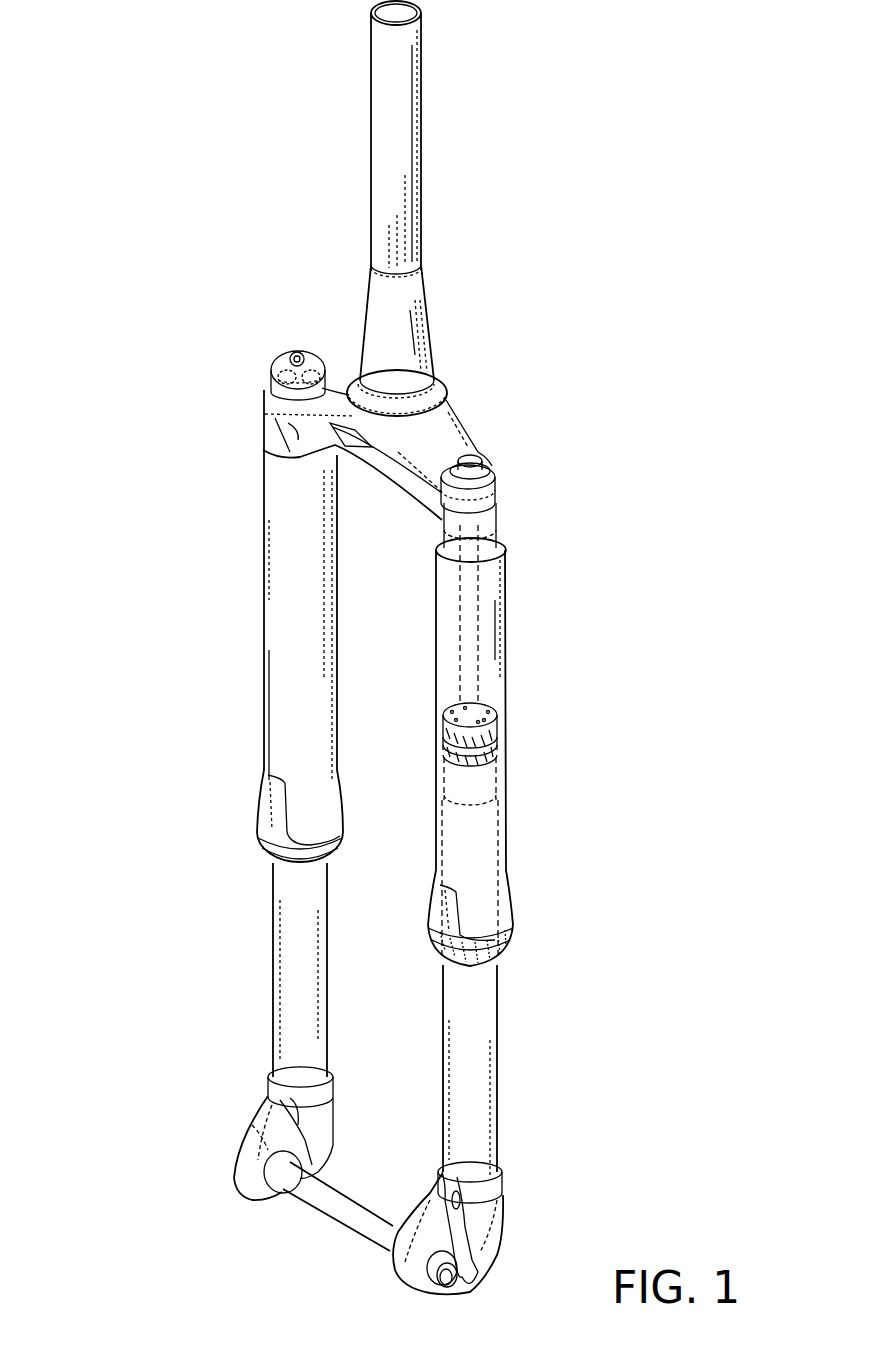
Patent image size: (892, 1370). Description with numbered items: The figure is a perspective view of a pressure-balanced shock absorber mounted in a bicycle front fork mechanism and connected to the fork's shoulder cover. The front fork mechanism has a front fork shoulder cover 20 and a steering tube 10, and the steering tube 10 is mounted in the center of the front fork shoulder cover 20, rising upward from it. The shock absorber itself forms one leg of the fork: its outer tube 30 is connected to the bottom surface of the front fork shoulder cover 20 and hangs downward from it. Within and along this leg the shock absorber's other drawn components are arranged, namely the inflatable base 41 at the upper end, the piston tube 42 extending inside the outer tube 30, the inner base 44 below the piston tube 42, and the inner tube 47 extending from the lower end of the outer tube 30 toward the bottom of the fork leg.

The steering tube 10 is at (432, 160).
The front fork shoulder cover 20 is at (466, 416).
The outer tube 30 is at (516, 640).
The inflatable base 41 is at (452, 528).
The piston tube 42 is at (473, 583).
The inner base 44 is at (503, 738).
The inner tube 47 is at (478, 1006).